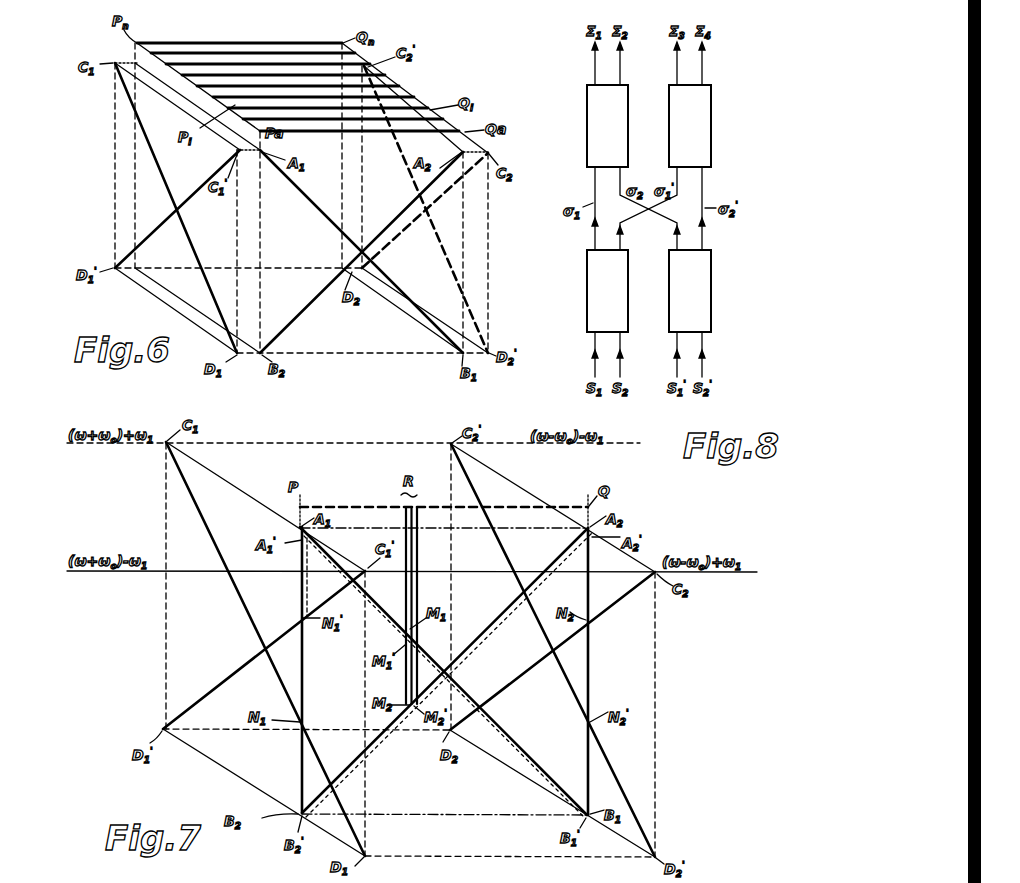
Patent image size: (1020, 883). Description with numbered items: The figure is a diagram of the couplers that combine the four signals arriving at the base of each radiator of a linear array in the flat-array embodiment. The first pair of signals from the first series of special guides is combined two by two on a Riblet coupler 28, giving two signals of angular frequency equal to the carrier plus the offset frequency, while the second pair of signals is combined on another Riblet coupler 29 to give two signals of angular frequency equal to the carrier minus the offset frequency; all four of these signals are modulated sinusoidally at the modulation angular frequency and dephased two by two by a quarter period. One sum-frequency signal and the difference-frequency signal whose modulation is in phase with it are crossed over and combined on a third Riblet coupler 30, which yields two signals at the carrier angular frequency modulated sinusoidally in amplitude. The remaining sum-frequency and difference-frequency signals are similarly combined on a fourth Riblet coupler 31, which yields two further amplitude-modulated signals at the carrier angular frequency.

The Riblet coupler 28 is at (592, 287).
The Riblet coupler 29 is at (703, 297).
The Riblet coupler 30 is at (596, 104).
The Riblet coupler 31 is at (704, 125).